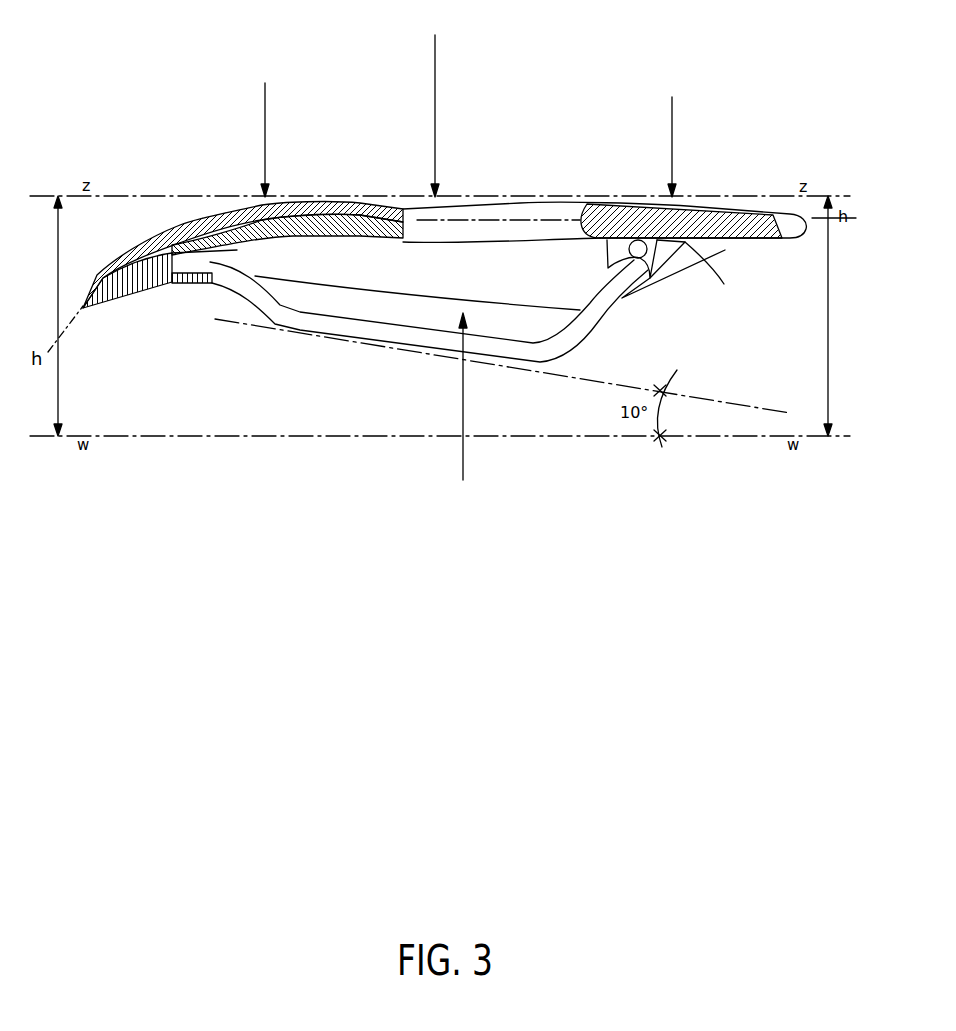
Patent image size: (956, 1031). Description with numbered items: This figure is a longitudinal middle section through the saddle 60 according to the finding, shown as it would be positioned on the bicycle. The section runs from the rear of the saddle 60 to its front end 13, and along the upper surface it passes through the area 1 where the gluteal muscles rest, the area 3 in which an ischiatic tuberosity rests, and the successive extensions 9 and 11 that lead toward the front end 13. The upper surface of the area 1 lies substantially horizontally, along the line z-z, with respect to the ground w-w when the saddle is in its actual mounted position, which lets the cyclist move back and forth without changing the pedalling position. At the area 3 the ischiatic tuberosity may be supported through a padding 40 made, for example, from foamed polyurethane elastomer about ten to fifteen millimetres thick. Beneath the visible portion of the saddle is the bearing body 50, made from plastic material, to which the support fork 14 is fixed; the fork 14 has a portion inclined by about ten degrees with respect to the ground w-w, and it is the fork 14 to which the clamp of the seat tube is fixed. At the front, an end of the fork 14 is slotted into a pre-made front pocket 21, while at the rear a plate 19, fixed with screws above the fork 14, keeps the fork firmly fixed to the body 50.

The gluteal muscle rest area 1 is at (760, 207).
The ischiatic tuberosity rest area 3 is at (612, 200).
The extension 9 is at (337, 197).
The extension 11 is at (195, 197).
The front end 13 is at (83, 310).
The support fork 14 is at (332, 338).
The plate 19 is at (673, 255).
The front pocket 21 is at (183, 282).
The padding 40 is at (470, 130).
The bearing body 50 is at (459, 407).
The saddle 60 is at (438, 106).